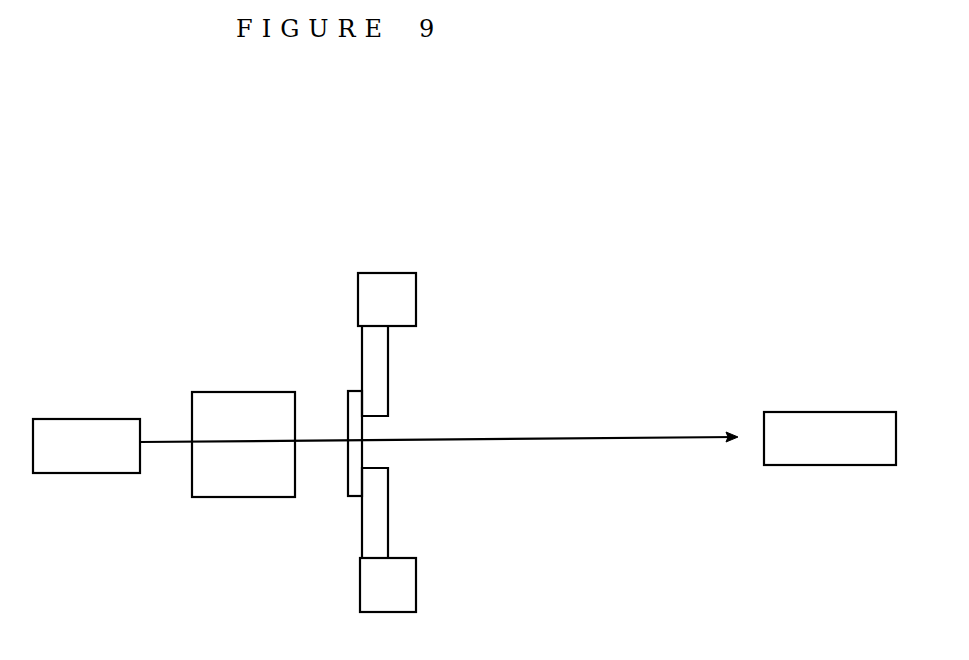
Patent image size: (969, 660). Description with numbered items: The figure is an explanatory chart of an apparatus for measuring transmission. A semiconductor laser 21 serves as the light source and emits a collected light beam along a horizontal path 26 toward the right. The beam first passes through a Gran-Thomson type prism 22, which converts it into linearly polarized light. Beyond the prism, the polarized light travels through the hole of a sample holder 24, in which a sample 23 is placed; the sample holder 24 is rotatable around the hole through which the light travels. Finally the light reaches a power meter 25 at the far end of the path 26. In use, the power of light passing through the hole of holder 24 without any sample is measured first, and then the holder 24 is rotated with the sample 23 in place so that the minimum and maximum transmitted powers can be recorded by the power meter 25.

The semiconductor laser 21 is at (85, 419).
The Gran-Thomson type prism 22 is at (247, 497).
The sample 23 is at (350, 391).
The sample holder 24 is at (417, 290).
The power meter 25 is at (790, 412).
The optical axis beam 26 is at (578, 440).